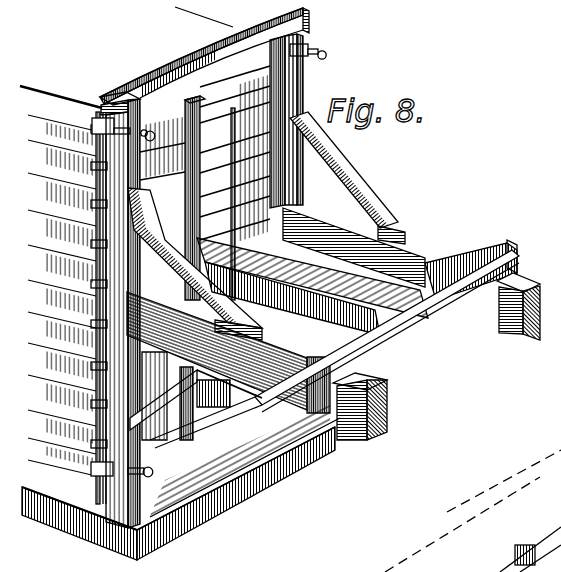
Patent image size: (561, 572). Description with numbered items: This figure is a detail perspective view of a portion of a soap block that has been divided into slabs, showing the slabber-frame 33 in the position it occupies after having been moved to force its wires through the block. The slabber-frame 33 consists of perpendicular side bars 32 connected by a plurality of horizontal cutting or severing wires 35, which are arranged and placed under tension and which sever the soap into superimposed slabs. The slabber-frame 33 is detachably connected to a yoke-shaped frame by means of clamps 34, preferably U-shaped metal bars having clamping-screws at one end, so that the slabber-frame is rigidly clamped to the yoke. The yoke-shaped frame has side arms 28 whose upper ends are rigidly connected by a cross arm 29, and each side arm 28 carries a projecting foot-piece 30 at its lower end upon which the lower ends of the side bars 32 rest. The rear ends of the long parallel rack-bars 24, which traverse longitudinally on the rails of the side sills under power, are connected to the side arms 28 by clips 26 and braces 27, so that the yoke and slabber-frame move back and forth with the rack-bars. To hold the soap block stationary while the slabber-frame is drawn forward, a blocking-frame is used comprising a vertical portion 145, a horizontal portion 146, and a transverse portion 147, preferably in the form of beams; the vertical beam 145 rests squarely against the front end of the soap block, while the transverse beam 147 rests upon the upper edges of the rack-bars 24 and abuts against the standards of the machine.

The rack-bars 24 is at (515, 338).
The clips 26 is at (331, 204).
The braces 27 is at (362, 207).
The side arms 28 is at (100, 370).
The cross arm 29 is at (248, 33).
The foot-piece 30 is at (110, 528).
The side bars 32 is at (97, 406).
The slabber-frame 33 is at (120, 297).
The clamps 34 is at (93, 130).
The cutting or severing wires 35 is at (226, 200).
The vertical portion 145 is at (205, 223).
The horizontal portion 146 is at (422, 270).
The transverse portion 147 is at (438, 322).